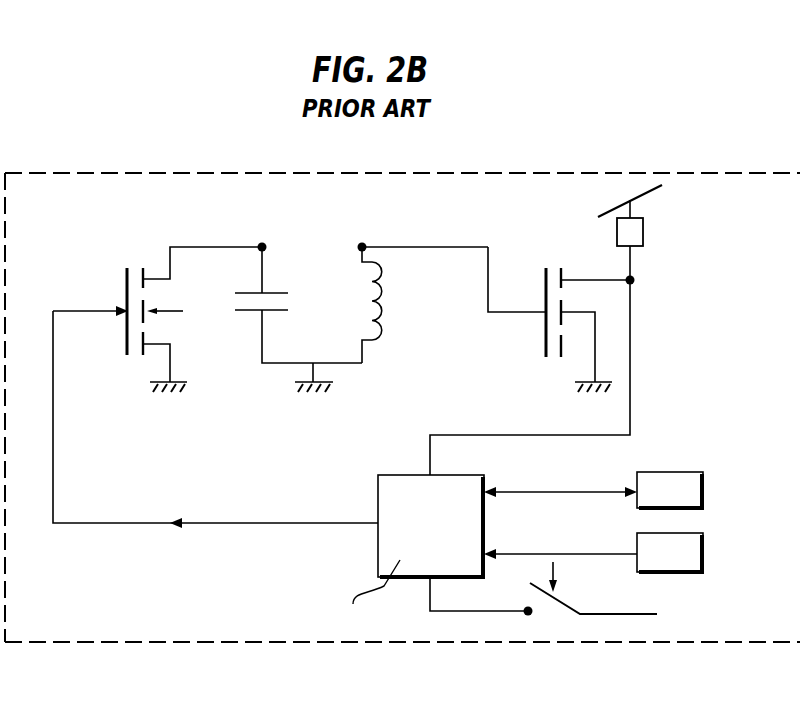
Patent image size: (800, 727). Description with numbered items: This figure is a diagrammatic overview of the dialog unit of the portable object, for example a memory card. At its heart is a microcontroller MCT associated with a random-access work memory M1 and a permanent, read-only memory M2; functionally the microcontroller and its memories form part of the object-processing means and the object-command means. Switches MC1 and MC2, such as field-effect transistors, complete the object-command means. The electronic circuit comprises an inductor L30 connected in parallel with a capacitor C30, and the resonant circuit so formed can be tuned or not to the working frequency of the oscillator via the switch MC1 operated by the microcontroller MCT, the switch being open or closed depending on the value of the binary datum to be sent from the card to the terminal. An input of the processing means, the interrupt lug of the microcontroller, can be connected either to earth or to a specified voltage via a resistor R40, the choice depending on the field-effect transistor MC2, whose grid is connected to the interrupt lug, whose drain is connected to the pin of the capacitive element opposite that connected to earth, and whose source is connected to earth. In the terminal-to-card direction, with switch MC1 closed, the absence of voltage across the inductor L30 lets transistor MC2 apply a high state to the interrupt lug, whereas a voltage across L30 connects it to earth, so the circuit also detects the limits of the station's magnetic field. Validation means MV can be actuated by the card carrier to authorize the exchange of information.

The switch MC1 is at (125, 272).
The capacitor C30 is at (273, 293).
The inductor L30 is at (382, 262).
The field-effect transistor MC2 is at (544, 330).
The resistor R40 is at (668, 238).
The microcontroller MCT is at (290, 472).
The random-access work memory M1 is at (703, 483).
The permanent, read-only memory M2 is at (703, 548).
The validation means MV is at (570, 580).